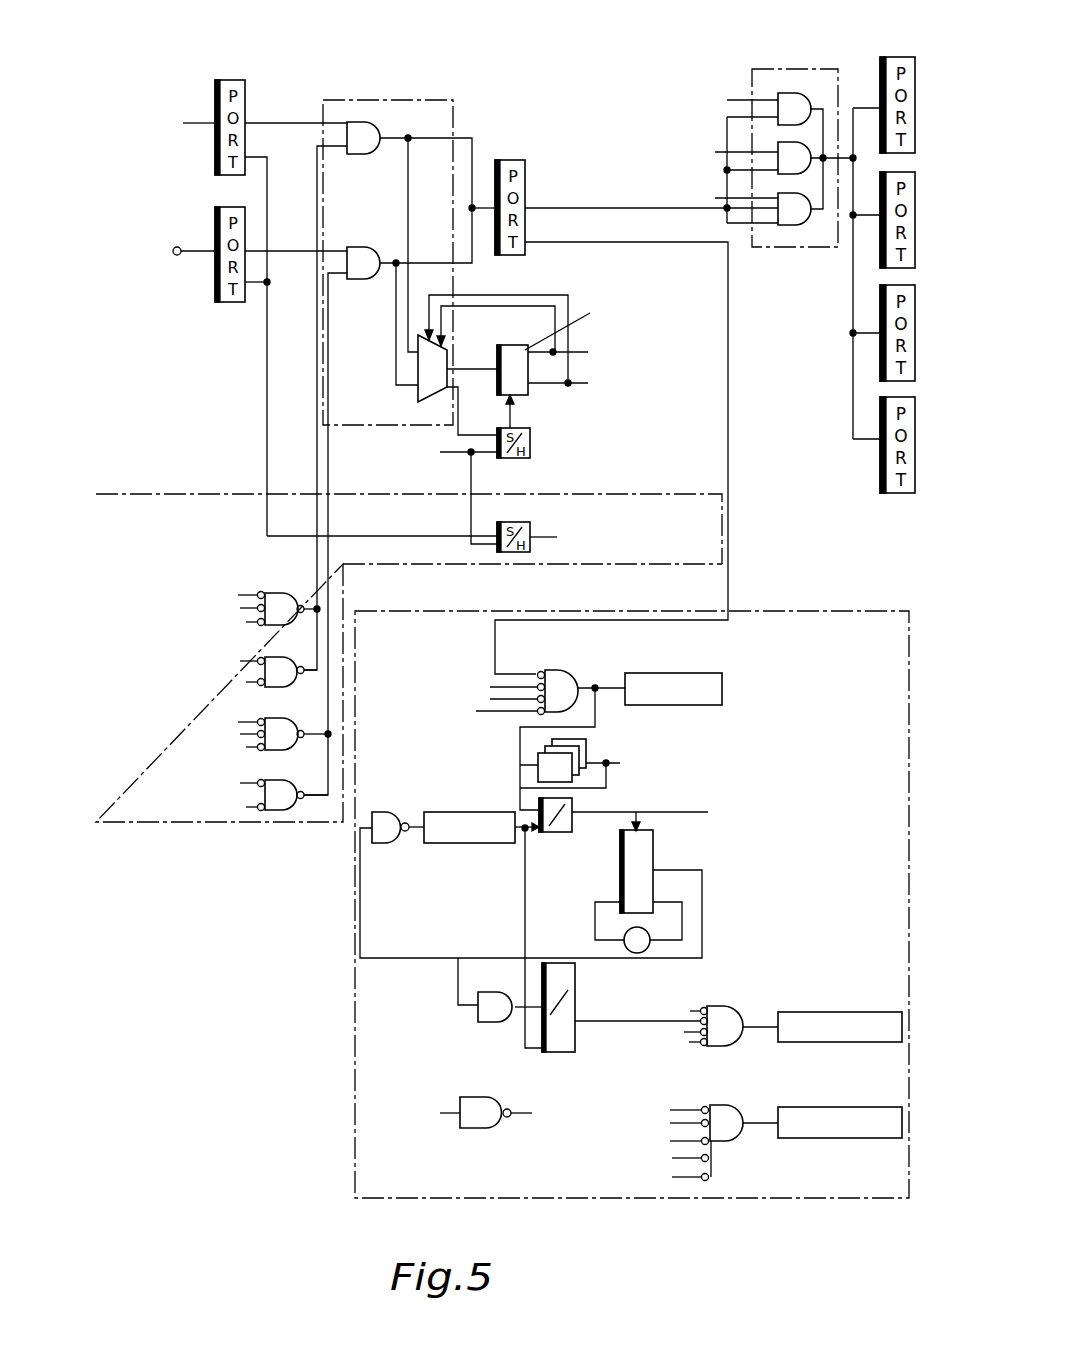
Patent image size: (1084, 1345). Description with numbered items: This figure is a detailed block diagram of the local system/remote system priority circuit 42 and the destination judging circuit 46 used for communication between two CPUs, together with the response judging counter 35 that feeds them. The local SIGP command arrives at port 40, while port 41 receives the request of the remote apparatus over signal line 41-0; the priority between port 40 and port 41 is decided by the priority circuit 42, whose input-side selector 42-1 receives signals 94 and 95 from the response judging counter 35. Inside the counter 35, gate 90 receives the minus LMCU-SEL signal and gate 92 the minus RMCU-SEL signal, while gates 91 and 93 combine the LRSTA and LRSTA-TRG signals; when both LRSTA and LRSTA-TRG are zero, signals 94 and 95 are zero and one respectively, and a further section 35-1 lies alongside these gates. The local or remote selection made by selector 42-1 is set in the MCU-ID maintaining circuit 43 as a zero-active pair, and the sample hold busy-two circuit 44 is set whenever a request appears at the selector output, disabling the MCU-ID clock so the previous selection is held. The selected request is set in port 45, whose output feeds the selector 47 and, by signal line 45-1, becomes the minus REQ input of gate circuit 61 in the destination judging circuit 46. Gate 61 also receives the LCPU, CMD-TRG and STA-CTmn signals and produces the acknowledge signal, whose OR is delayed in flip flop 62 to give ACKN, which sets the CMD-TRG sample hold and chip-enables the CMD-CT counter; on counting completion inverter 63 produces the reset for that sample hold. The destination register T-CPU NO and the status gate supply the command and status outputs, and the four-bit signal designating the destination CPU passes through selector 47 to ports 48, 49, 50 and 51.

The response judging counter 35 is at (123, 822).
The response judging counter section 35-1 is at (302, 582).
The port 40 is at (238, 80).
The port 41 is at (241, 302).
The signal line 41-0 is at (183, 255).
The local system/remote system priority circuit 42 is at (472, 77).
The selector 42-1 is at (350, 108).
The MCU-ID maintaining circuit 43 is at (530, 390).
The BUSY 2 circuit 44 is at (530, 437).
The port 45 is at (514, 160).
The signal line 45-1 is at (638, 241).
The destination judging circuit 46 is at (355, 988).
The selector 47 is at (767, 240).
The port 48 is at (910, 73).
The port 49 is at (910, 185).
The port 50 is at (910, 298).
The port 51 is at (902, 493).
The gate circuit 61 is at (557, 675).
The flip flop 62 is at (585, 745).
The inverter 63 is at (385, 818).
The gate circuit 90 is at (207, 608).
The gate circuit 91 is at (207, 667).
The gate circuit 92 is at (213, 729).
The gate circuit 93 is at (213, 789).
The signal line 94 is at (317, 452).
The signal line 95 is at (330, 513).